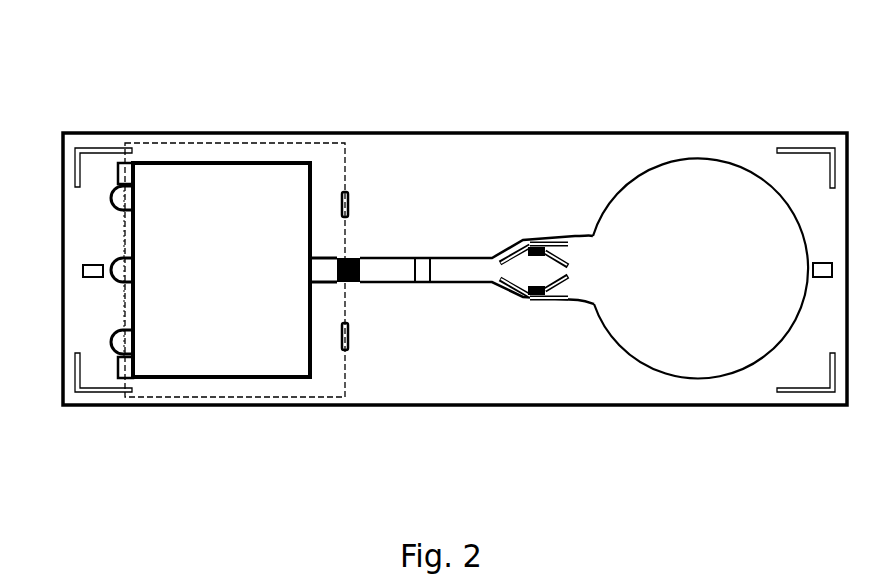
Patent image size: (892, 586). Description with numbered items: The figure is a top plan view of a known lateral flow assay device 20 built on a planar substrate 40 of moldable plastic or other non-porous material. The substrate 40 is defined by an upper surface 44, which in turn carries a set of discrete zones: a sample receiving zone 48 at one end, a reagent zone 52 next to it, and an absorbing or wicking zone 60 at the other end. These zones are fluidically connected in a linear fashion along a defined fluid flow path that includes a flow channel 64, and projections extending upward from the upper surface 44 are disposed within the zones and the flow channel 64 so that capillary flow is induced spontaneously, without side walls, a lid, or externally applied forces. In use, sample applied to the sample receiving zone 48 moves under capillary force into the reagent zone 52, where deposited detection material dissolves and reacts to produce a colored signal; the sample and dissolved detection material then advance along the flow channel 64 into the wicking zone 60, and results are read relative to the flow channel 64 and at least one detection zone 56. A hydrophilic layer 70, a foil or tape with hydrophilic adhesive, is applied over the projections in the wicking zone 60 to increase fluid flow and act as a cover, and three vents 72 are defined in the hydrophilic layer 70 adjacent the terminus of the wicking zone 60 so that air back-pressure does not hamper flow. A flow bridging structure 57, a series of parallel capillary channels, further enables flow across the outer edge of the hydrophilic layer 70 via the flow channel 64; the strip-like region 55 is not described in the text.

The lateral flow assay device 20 is at (302, 70).
The planar substrate 40 is at (600, 133).
The upper surface 44 is at (383, 155).
The sample receiving zone 48 is at (702, 270).
The reagent zone 52 is at (542, 272).
The conductor strip 55 is at (377, 270).
The detection zone 56 is at (422, 257).
The flow bridging structure 57 is at (346, 257).
The wicking zone 60 is at (222, 270).
The flow channel 64 is at (452, 345).
The hydrophilic layer 70 is at (253, 141).
The vents 72 is at (123, 198).